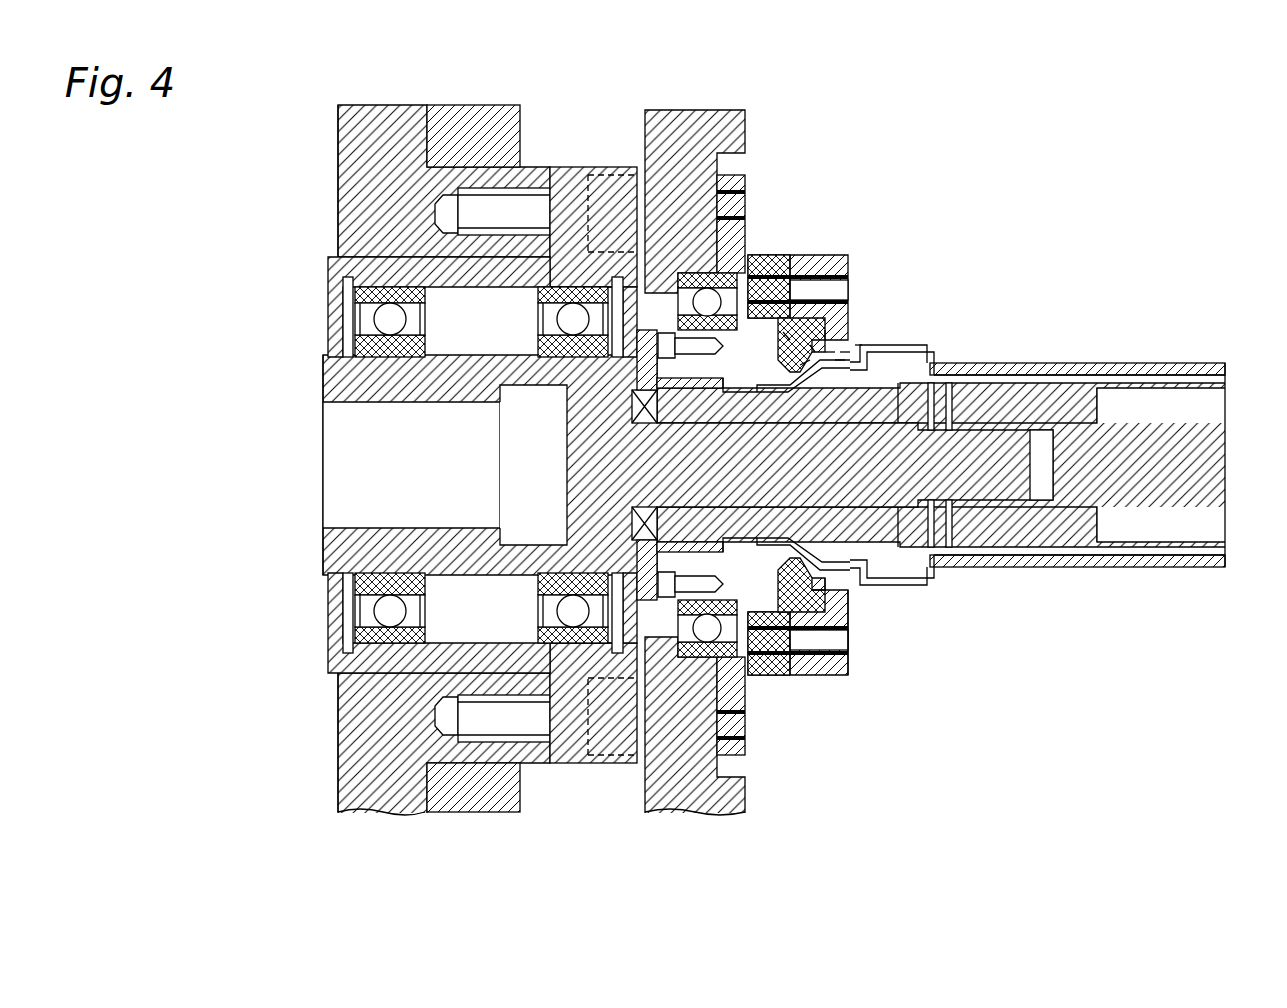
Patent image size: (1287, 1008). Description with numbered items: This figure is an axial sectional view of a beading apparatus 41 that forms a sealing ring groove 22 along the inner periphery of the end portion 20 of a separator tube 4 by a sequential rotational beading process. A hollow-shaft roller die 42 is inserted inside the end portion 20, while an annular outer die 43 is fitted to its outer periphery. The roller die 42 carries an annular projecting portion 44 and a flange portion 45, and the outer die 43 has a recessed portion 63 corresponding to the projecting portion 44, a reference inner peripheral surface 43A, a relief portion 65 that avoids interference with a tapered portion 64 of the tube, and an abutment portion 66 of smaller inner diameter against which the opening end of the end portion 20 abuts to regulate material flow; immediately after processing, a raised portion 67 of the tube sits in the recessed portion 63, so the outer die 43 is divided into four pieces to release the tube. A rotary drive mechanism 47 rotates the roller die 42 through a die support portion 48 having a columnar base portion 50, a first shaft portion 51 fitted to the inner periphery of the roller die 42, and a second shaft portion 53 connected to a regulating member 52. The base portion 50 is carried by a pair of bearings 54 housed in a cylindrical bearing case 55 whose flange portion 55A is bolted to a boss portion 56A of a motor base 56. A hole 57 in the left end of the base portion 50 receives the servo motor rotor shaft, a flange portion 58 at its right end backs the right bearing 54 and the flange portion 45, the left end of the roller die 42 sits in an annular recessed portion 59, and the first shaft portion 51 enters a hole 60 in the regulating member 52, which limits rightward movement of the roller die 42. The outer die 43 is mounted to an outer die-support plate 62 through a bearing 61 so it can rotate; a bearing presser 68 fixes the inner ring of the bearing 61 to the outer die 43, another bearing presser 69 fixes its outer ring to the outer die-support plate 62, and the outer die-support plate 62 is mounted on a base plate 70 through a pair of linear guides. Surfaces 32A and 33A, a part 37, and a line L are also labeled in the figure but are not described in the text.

The separator tube 4 is at (1173, 363).
The end portion 20 is at (800, 620).
The sealing ring groove 22 is at (843, 560).
The contact surface 32A is at (805, 360).
The contact surface 33A is at (812, 345).
The collar 37 is at (928, 355).
The beading apparatus 41 is at (318, 179).
The roller die 42 is at (893, 560).
The outer die 43 is at (763, 253).
The reference inner peripheral surface 43A is at (840, 360).
The projecting portion 44 is at (848, 352).
The flange portion 45 is at (860, 345).
The rotary drive mechanism 47 is at (312, 682).
The die support portion 48 is at (316, 378).
The base portion 50 is at (322, 542).
The first shaft portion 51 is at (953, 380).
The regulating member 52 is at (1047, 543).
The second shaft portion 53 is at (997, 470).
The bearings 54 is at (375, 278).
The bearing case 55 is at (390, 667).
The flange portion 55A is at (575, 757).
The motor base 56 is at (337, 788).
The boss portion 56A is at (475, 765).
The hole 57 is at (362, 518).
The flange portion 58 is at (622, 672).
The annular recessed portion 59 is at (666, 600).
The hole 60 is at (930, 547).
The bearing 61 is at (710, 660).
The outer die-support plate 62 is at (737, 795).
The recessed portion 63 is at (830, 330).
The tapered portion 64 is at (836, 672).
The relief portion 65 is at (852, 650).
The abutment portion 66 is at (758, 300).
The raised portion 67 is at (835, 350).
The bearing presser 68 is at (607, 255).
The bearing presser 69 is at (748, 693).
The base plate 70 is at (460, 122).
The line L is at (785, 335).